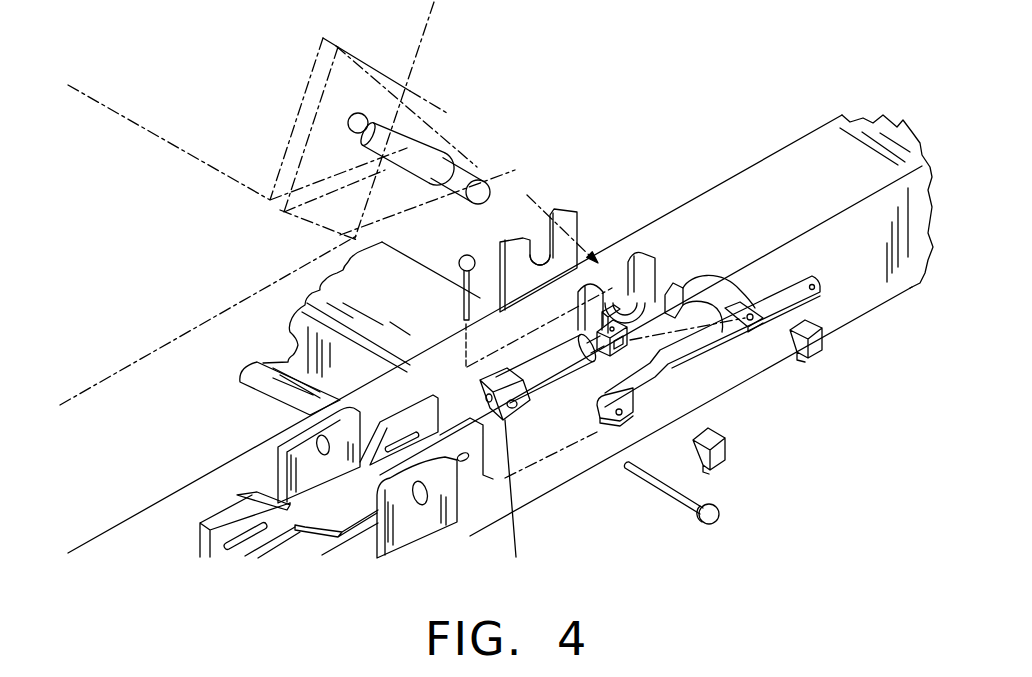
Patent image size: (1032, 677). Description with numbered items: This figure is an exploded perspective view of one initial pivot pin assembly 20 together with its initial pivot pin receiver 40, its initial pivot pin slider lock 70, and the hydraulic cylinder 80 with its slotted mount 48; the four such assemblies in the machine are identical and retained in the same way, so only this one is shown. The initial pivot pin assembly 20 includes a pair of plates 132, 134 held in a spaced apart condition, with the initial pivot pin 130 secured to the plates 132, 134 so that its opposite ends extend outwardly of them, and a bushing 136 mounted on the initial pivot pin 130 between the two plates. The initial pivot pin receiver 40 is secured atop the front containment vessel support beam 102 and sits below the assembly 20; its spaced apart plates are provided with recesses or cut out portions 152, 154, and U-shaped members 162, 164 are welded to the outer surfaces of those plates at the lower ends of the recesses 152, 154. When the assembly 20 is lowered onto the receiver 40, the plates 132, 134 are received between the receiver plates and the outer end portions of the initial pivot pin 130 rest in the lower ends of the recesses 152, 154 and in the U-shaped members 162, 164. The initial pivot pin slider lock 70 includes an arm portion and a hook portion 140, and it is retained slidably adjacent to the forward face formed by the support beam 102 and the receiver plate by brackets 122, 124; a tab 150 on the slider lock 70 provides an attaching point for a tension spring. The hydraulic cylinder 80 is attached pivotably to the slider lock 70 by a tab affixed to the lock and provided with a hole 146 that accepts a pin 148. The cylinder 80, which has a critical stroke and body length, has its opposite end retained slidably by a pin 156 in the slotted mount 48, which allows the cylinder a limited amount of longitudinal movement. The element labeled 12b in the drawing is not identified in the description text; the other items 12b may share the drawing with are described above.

The initial pivot pin assembly 20 is at (457, 118).
The initial pivot pin receiver 40 is at (610, 232).
The slotted mount 48 is at (245, 503).
The initial pivot pin slider lock 70 is at (686, 362).
The hydraulic cylinder 80 is at (542, 444).
The front containment vessel support beam 102 is at (811, 176).
The slide block 12b is at (240, 395).
The bracket 122 is at (727, 443).
The bracket 124 is at (823, 340).
The initial pivot pin 130 is at (462, 180).
The plate 132 is at (345, 158).
The plate 134 is at (409, 203).
The bushing 136 is at (447, 120).
The hook portion 140 is at (710, 278).
The hole 146 is at (751, 308).
The pin 148 is at (460, 297).
The tab 150 is at (636, 408).
The recess or cut out portion 152 is at (553, 210).
The recess or cut out portion 154 is at (630, 267).
The pin 156 is at (657, 493).
The U-shaped member 162 is at (543, 240).
The U-shaped member 164 is at (640, 258).